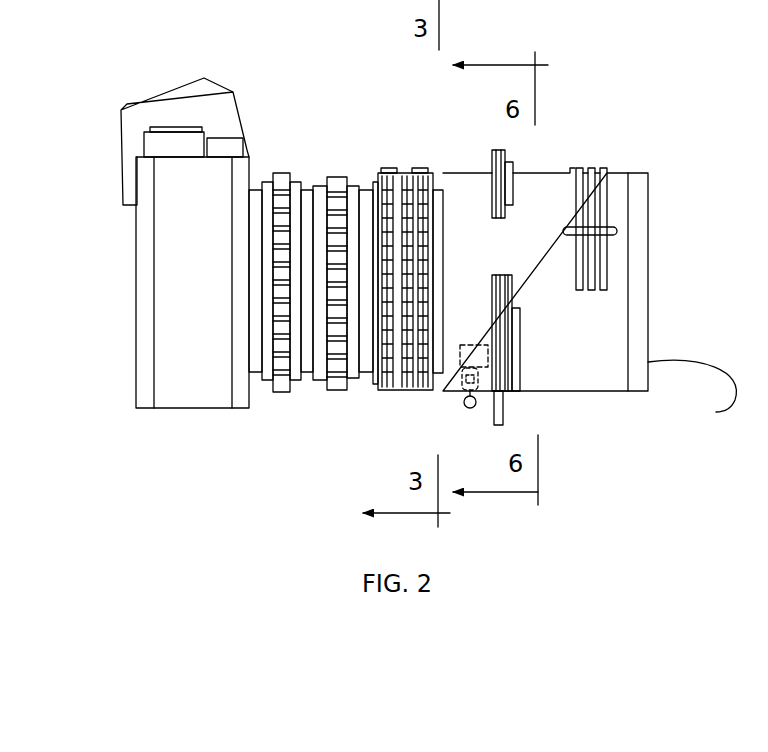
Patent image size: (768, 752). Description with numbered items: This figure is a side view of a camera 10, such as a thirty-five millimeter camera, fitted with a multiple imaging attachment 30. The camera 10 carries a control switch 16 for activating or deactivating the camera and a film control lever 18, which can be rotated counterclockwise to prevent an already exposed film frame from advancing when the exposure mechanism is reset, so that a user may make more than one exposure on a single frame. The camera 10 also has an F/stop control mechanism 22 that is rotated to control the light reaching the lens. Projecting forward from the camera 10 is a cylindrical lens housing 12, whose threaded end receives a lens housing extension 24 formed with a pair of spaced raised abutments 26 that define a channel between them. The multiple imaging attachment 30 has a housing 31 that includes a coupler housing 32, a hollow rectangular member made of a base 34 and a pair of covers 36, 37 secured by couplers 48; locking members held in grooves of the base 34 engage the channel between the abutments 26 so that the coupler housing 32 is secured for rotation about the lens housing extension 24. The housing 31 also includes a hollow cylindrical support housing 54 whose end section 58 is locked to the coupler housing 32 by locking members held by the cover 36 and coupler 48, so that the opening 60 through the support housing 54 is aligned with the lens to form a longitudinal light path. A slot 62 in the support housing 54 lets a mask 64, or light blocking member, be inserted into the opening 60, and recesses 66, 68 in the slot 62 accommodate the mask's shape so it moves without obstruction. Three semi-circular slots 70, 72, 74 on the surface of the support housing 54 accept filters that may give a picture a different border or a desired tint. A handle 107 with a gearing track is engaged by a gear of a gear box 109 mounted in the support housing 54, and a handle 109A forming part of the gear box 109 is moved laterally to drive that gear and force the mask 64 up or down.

The camera 10 is at (127, 373).
The lens housing 12 is at (303, 382).
The control switch 16 is at (223, 138).
The film control lever 18 is at (143, 141).
The F/stop control mechanism 22 is at (276, 172).
The lens housing extension 24 is at (361, 178).
The raised abutments 26 is at (372, 393).
The multiple imaging attachment 30 is at (615, 407).
The housing 31 is at (477, 171).
The coupler housing 32 is at (389, 394).
The base 34 is at (373, 173).
The cover 36 is at (394, 182).
The cover 37 is at (402, 200).
The couplers 48 is at (420, 168).
The support housing 54 is at (641, 174).
The end section 58 is at (437, 390).
The opening 60 is at (692, 395).
The slot 62 is at (470, 408).
The mask 64 is at (515, 399).
The recess 66 is at (513, 333).
The recess 68 is at (512, 172).
The semi-circular slot 70 is at (578, 167).
The semi-circular slot 72 is at (593, 167).
The semi-circular slot 74 is at (613, 170).
The handle 107 is at (513, 403).
The gear box 109 is at (477, 357).
The handle 109A is at (435, 410).